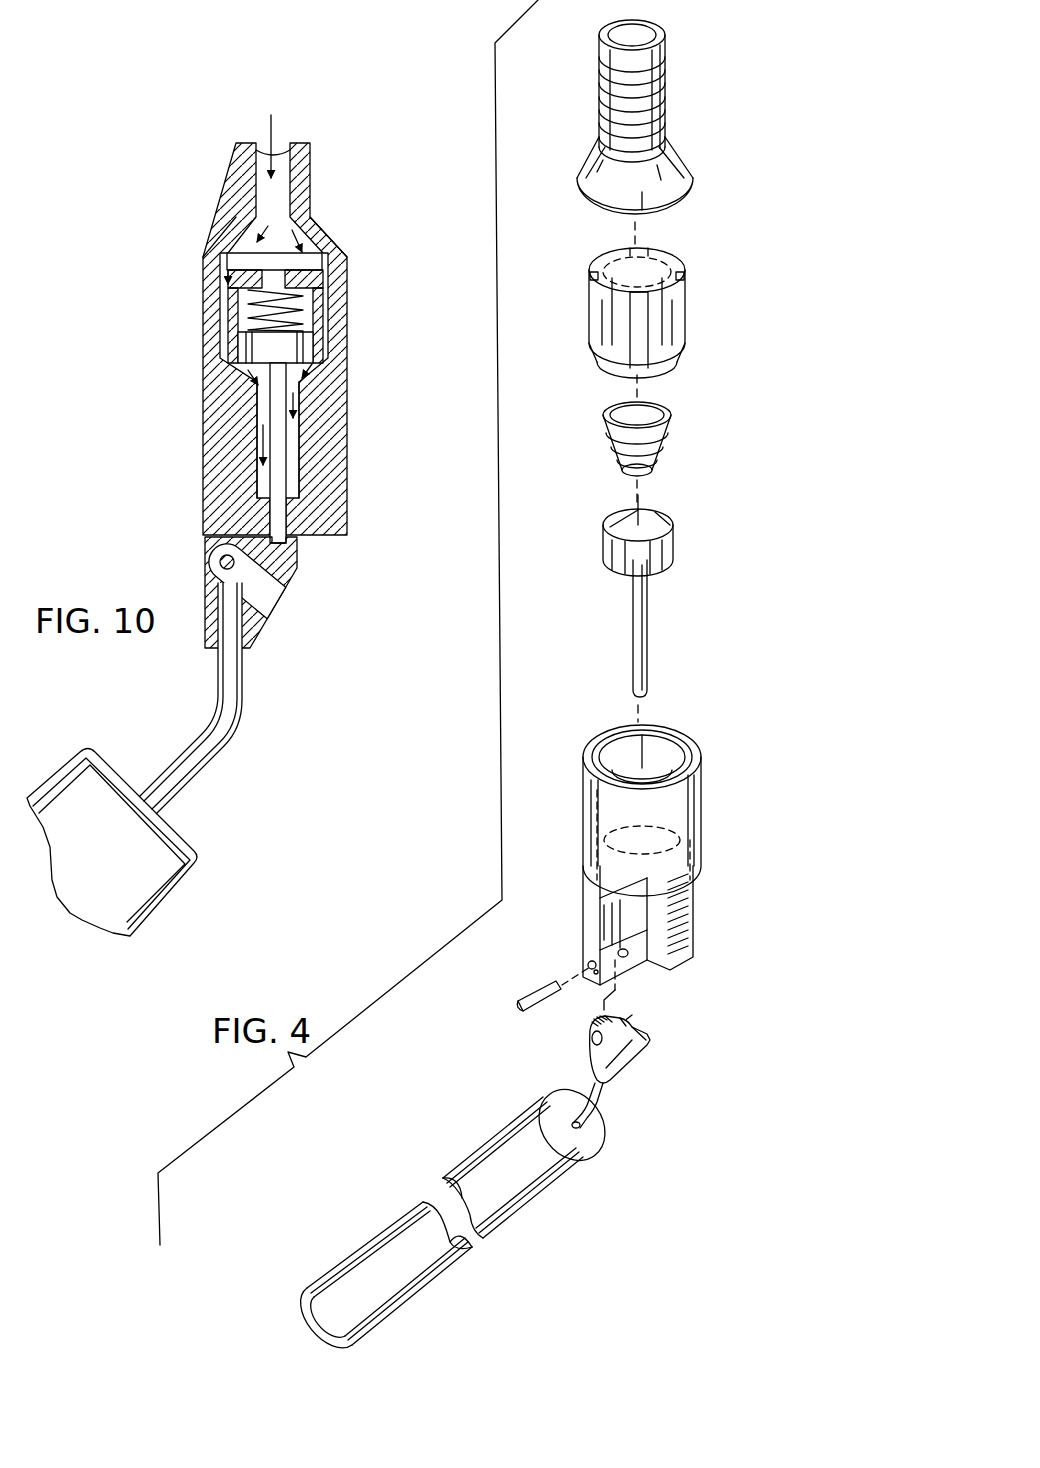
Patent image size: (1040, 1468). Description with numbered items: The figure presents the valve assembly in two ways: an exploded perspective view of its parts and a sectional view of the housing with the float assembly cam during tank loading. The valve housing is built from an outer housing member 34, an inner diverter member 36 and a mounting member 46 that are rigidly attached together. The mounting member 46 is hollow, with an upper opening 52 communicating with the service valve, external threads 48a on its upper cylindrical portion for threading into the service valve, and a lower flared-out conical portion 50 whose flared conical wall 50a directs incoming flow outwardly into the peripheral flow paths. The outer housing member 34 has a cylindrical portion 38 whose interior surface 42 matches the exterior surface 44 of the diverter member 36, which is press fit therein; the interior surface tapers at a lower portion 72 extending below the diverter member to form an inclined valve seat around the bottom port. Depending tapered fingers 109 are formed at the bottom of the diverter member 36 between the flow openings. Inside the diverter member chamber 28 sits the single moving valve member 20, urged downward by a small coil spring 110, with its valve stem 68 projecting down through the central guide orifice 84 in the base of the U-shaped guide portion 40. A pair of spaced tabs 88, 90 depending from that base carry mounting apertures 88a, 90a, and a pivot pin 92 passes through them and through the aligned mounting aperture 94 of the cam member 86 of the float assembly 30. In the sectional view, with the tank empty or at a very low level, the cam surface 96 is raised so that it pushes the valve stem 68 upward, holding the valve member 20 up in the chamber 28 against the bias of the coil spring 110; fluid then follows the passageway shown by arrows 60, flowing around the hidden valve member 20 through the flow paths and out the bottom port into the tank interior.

In FIG. 10, the valve member 20 is at (303, 341).
In FIG. 4, the valve member 20 is at (672, 543).
In FIG. 10, the diverter member chamber 28 is at (303, 315).
In FIG. 10, the float assembly 30 is at (243, 771).
In FIG. 4, the float assembly 30 is at (636, 1116).
In FIG. 4, the outer housing member 34 is at (711, 819).
In FIG. 4, the inner diverter member 36 is at (655, 327).
In FIG. 4, the cylindrical portion 38 is at (631, 862).
In FIG. 4, the guide portion 40 is at (631, 956).
In FIG. 10, the interior surface 42 is at (330, 268).
In FIG. 10, the exterior surface 44 is at (238, 334).
In FIG. 4, the mounting member 46 is at (686, 124).
In FIG. 4, the external threads 48a is at (666, 116).
In FIG. 4, the flared-out conical portion 50 is at (676, 66).
In FIG. 4, the upper opening 52 is at (644, 32).
In FIG. 10, the arrows depicting fluid flow 60 is at (271, 130).
In FIG. 10, the valve stem 68 is at (285, 466).
In FIG. 4, the valve stem 68 is at (645, 633).
In FIG. 4, the tapered lower portion 72 is at (598, 840).
In FIG. 4, the central guide orifice 84 is at (597, 895).
In FIG. 10, the cam member 86 is at (267, 588).
In FIG. 4, the cam member 86 is at (604, 1025).
In FIG. 4, the tab 88 is at (588, 964).
In FIG. 4, the mounting aperture 88a is at (595, 975).
In FIG. 4, the tab 90 is at (627, 958).
In FIG. 4, the mounting aperture 90a is at (620, 950).
In FIG. 4, the pivot pin 92 is at (517, 1002).
In FIG. 4, the mounting aperture 94 is at (588, 1060).
In FIG. 10, the cam surface 96 is at (268, 543).
In FIG. 4, the tapered fingers 109 is at (612, 368).
In FIG. 10, the coil spring 110 is at (238, 308).
In FIG. 4, the coil spring 110 is at (673, 457).
In FIG. 10, the flared conical wall 50a is at (224, 232).